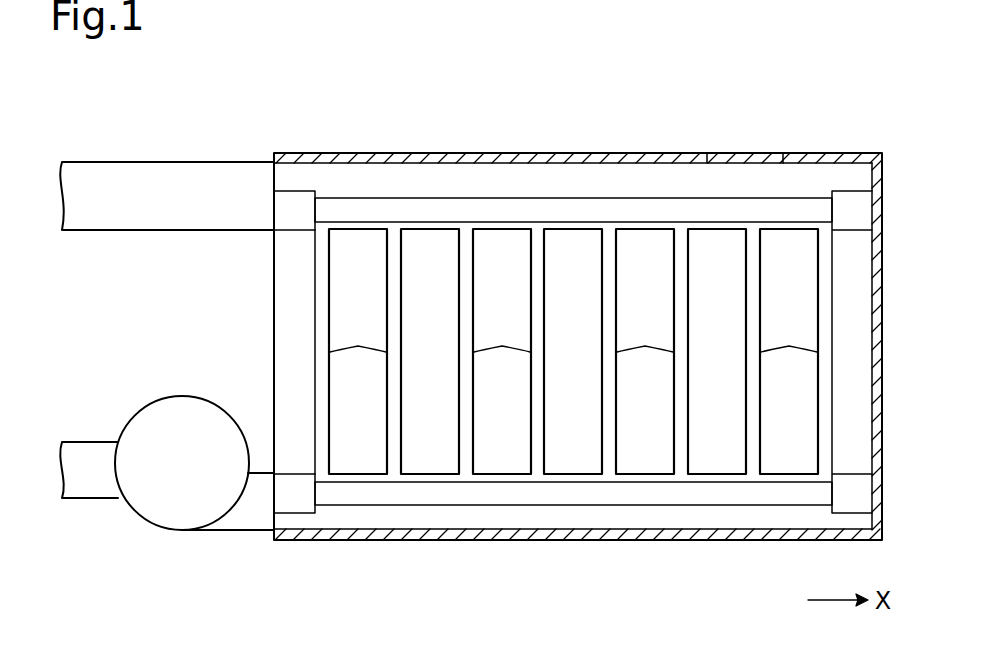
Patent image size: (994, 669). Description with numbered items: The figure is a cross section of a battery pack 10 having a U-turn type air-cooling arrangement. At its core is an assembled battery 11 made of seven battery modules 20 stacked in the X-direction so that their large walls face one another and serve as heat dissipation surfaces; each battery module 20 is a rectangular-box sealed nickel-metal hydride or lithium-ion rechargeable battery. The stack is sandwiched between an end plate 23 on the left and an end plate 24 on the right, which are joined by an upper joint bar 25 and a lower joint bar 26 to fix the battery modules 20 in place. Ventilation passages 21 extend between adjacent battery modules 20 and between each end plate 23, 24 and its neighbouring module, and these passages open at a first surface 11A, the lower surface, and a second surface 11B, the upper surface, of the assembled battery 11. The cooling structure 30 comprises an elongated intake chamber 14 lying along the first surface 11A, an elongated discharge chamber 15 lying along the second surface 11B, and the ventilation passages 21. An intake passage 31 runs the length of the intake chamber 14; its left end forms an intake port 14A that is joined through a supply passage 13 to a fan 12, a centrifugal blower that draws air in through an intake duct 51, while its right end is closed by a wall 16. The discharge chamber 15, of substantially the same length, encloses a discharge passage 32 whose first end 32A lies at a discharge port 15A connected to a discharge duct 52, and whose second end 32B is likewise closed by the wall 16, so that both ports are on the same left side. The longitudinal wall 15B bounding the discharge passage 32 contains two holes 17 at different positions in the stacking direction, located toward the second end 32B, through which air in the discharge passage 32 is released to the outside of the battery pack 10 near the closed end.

The battery pack 10 is at (499, 332).
The assembled battery 11 is at (576, 356).
The first surface 11A is at (573, 540).
The second surface 11B is at (568, 171).
The fan 12 is at (205, 398).
The supply passage 13 is at (248, 531).
The intake chamber 14 is at (728, 540).
The intake port 14A is at (272, 527).
The discharge chamber 15 is at (577, 136).
The discharge port 15A is at (272, 212).
The wall 15B is at (375, 153).
The wall 16 is at (877, 322).
The holes 17 is at (707, 155).
The battery module 20 is at (415, 236).
The ventilation passage 21 is at (573, 331).
The end plate 23 is at (292, 283).
The end plate 24 is at (857, 277).
The joint bar 25 is at (460, 213).
The joint bar 26 is at (550, 495).
The cooling structure 30 is at (237, 201).
The intake passage 31 is at (638, 518).
The discharge passage 32 is at (560, 346).
The first end 32A is at (273, 172).
The second end 32B is at (876, 170).
The intake duct 51 is at (85, 442).
The discharge duct 52 is at (88, 162).